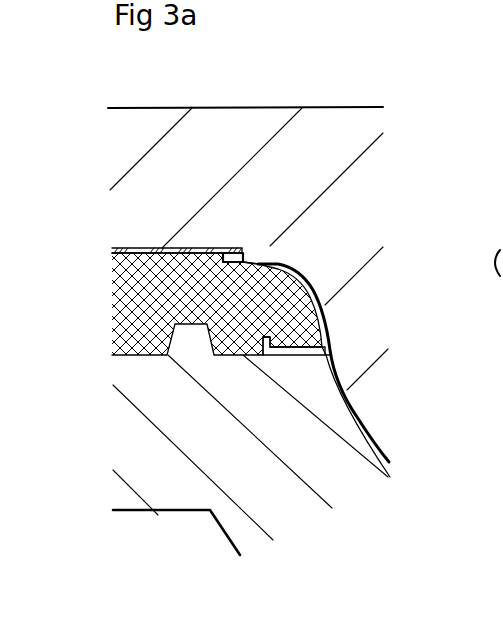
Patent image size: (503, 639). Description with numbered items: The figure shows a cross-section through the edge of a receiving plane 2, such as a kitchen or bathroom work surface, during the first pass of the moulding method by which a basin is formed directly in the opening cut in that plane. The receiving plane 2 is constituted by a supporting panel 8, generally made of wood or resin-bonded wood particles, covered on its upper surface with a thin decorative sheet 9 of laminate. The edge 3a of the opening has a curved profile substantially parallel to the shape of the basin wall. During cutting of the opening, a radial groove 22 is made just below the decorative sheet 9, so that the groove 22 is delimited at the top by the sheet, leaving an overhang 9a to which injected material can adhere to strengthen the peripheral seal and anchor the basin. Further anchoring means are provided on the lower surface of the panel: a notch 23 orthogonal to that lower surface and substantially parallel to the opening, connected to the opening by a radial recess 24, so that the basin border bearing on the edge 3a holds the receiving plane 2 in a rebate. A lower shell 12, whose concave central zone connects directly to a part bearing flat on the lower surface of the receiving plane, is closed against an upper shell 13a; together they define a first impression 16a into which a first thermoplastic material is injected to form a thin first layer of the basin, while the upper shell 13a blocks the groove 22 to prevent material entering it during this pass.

The receiving plane 2 is at (86, 287).
The edge of the opening 3a is at (306, 288).
The supporting panel 8 is at (130, 307).
The decorative sheet 9 is at (143, 248).
The overhang 9a is at (236, 251).
The lower shell 12 is at (170, 478).
The upper shell 13a is at (233, 150).
The first impression 16a is at (338, 389).
The radial groove 22 is at (243, 255).
The notch 23 is at (267, 338).
The radial recess 24 is at (300, 352).